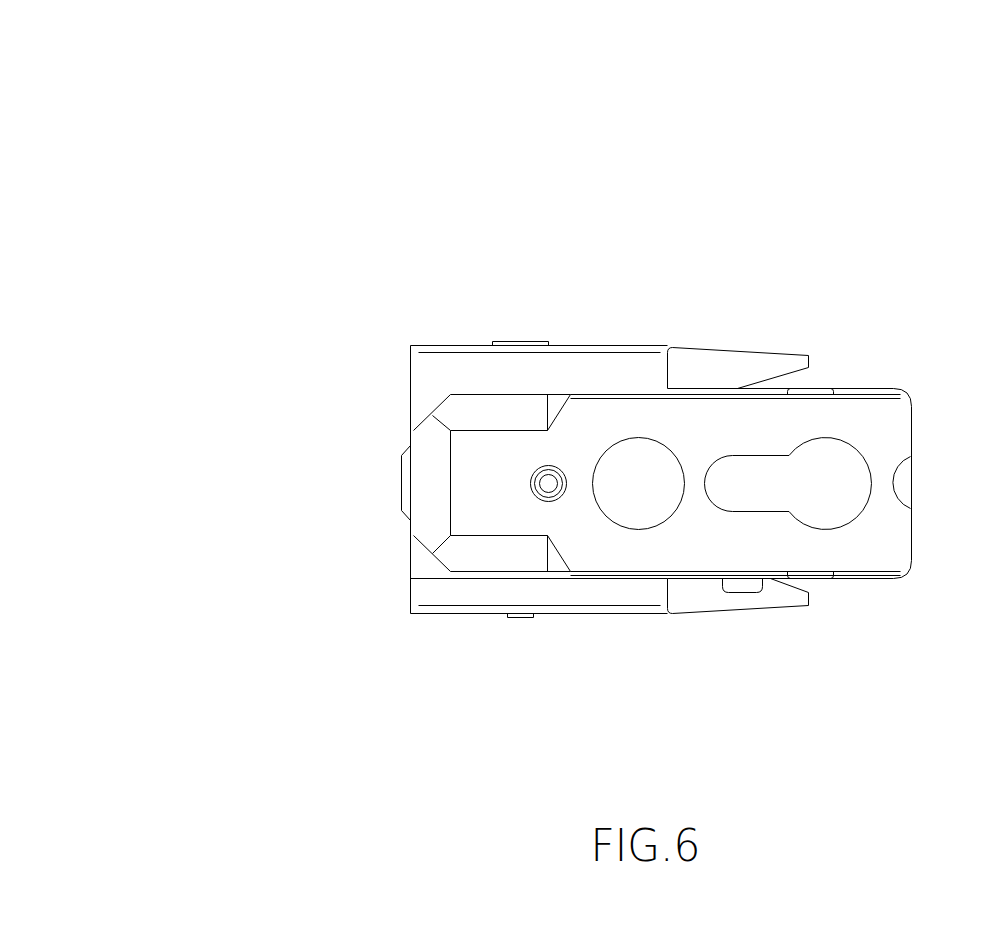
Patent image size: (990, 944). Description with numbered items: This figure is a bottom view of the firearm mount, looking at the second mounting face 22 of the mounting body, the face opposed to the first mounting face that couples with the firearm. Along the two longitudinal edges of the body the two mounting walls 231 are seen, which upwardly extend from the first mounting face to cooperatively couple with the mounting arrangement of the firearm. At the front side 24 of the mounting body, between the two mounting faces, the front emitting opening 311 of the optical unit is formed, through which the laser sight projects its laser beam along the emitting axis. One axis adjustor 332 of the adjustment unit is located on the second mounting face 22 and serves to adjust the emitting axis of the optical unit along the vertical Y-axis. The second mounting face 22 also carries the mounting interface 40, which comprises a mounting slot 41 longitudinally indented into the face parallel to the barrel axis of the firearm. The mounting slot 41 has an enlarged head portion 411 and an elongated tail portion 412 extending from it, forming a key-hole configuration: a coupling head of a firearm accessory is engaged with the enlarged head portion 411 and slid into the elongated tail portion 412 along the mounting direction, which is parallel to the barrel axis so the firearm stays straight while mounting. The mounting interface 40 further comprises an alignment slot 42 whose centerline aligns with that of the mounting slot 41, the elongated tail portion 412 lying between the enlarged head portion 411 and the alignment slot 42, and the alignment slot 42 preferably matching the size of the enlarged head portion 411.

The second mounting face 22 is at (475, 500).
The front side 24 is at (405, 395).
The mounting wall 231 is at (463, 365).
The front emitting opening 311 is at (395, 487).
The axis adjustor 332 is at (552, 487).
The mounting interface 40 is at (772, 175).
The mounting slot 41 is at (882, 270).
The alignment slot 42 is at (634, 474).
The enlarged head portion 411 is at (837, 470).
The elongated tail portion 412 is at (755, 478).